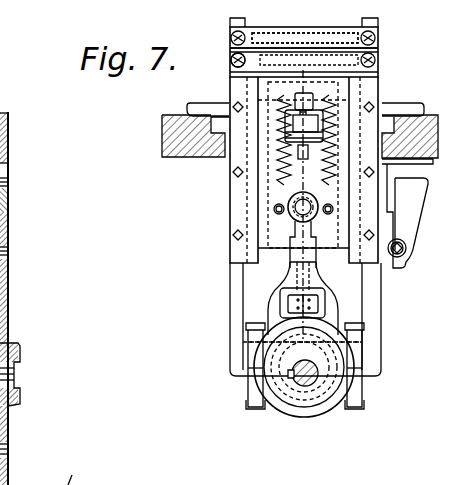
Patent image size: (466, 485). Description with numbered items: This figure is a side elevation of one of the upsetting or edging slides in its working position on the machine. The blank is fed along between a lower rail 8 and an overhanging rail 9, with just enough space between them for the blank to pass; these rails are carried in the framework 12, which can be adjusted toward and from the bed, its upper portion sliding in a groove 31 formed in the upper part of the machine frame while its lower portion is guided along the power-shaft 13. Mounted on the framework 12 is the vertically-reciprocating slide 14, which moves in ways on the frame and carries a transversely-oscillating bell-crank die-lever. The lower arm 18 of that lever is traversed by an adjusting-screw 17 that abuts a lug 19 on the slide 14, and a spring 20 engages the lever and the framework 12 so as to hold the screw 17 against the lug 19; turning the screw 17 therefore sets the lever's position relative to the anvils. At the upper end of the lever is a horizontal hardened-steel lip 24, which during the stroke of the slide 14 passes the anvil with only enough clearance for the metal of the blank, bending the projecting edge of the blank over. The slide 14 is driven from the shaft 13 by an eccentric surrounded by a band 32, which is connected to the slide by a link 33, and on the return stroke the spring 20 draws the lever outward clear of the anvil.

The lower rail 8 is at (262, 58).
The overhanging rail 9 is at (252, 34).
The framework 12 is at (230, 279).
The power-shaft 13 is at (298, 384).
The vertically-reciprocating slide 14 is at (265, 217).
The adjusting-screw 17 is at (272, 178).
The arm of bell-crank lever 18 is at (320, 122).
The lug 19 is at (305, 101).
The spring 20 is at (280, 160).
The lip 24 is at (302, 36).
The groove 31 is at (217, 128).
The band 32 is at (337, 413).
The link 33 is at (297, 224).